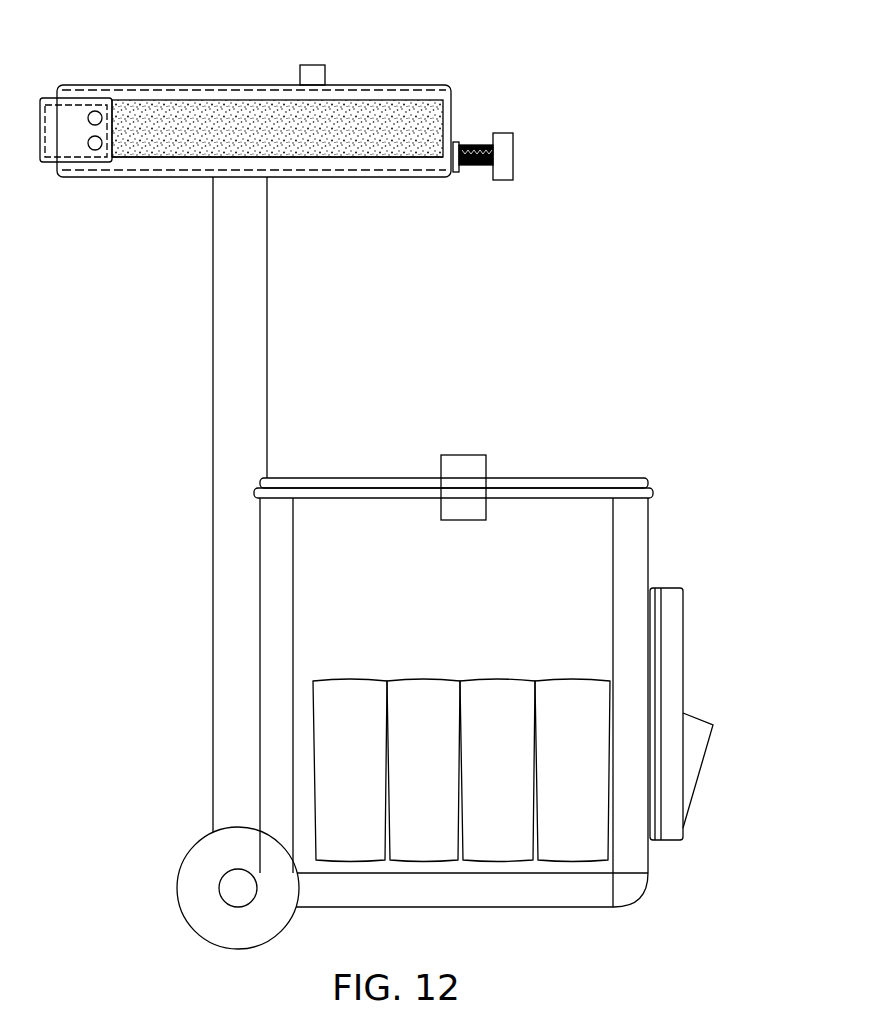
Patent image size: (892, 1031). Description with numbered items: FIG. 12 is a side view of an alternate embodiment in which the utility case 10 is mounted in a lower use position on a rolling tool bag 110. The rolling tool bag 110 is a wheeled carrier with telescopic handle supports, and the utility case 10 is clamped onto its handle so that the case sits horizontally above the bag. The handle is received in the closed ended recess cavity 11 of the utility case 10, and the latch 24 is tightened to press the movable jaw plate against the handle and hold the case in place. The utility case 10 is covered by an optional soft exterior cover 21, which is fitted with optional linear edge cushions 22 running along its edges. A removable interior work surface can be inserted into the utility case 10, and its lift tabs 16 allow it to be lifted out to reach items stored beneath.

The utility case 10 is at (420, 178).
The closed ended recess cavity 11 is at (214, 352).
The lift tabs 16 is at (322, 63).
The soft exterior cover 21 is at (160, 122).
The linear edge cushions 22 is at (155, 165).
The latch 24 is at (505, 134).
The rolling tool bag 110 is at (650, 528).